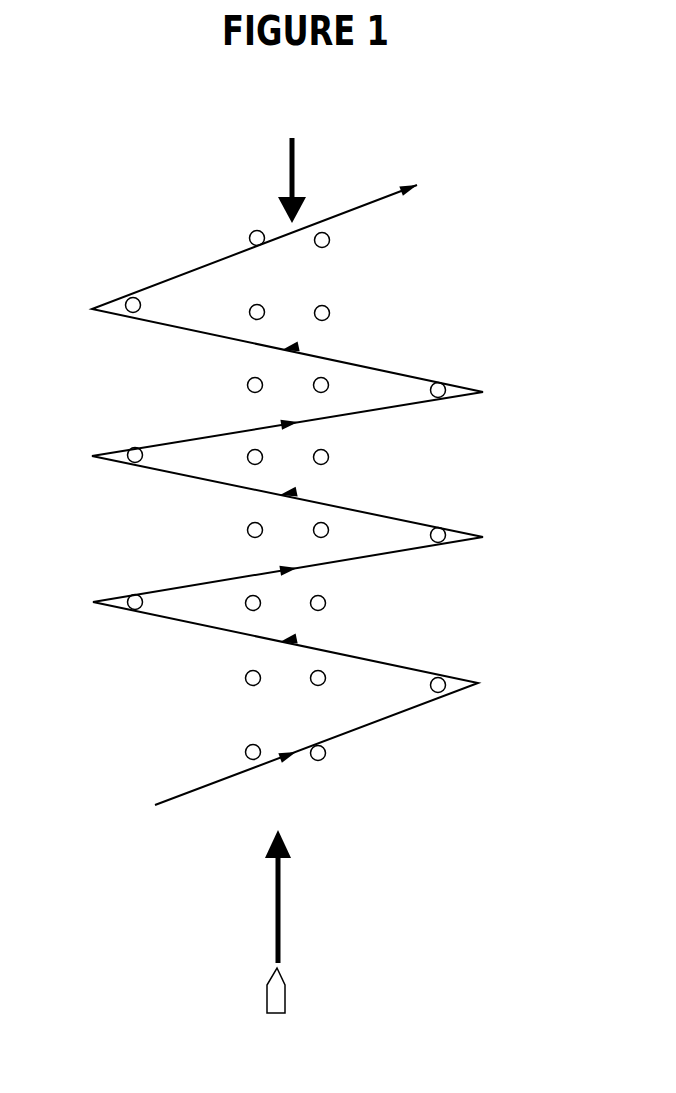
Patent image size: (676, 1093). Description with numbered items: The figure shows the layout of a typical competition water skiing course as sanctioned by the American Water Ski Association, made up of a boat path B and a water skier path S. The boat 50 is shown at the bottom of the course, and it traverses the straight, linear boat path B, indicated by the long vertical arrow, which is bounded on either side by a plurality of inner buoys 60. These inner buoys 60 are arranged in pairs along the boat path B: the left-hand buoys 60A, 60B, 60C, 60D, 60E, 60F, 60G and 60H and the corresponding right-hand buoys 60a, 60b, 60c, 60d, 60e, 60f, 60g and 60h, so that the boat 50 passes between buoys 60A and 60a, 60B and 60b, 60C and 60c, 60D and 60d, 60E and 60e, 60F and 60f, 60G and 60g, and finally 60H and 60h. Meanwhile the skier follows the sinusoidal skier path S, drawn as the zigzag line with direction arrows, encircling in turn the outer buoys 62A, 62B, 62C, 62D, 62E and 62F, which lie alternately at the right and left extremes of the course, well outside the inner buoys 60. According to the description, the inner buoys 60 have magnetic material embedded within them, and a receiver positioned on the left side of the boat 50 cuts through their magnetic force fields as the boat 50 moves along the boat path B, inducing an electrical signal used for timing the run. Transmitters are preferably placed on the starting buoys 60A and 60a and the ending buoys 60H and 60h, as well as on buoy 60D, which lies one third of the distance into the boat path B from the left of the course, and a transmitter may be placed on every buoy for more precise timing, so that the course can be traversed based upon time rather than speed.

The boat 50 is at (270, 995).
The inner buoys 60 is at (294, 145).
The inner buoy 60A is at (246, 755).
The inner buoy 60B is at (246, 681).
The inner buoy 60C is at (248, 608).
The inner buoy 60D is at (248, 534).
The inner buoy 60E is at (250, 461).
The inner buoy 60F is at (249, 389).
The inner buoy 60G is at (252, 317).
The inner buoy 60H is at (249, 239).
The inner buoy 60a is at (323, 759).
The inner buoy 60b is at (325, 680).
The inner buoy 60c is at (325, 607).
The inner buoy 60d is at (327, 535).
The inner buoy 60e is at (327, 460).
The inner buoy 60f is at (327, 390).
The inner buoy 60g is at (329, 316).
The inner buoy 60h is at (329, 244).
The outer buoy 62A is at (444, 690).
The outer buoy 62B is at (130, 598).
The outer buoy 62C is at (444, 541).
The outer buoy 62D is at (130, 450).
The outer buoy 62E is at (444, 396).
The outer buoy 62F is at (127, 299).
The water skier path S is at (382, 200).
The boat path B is at (280, 890).